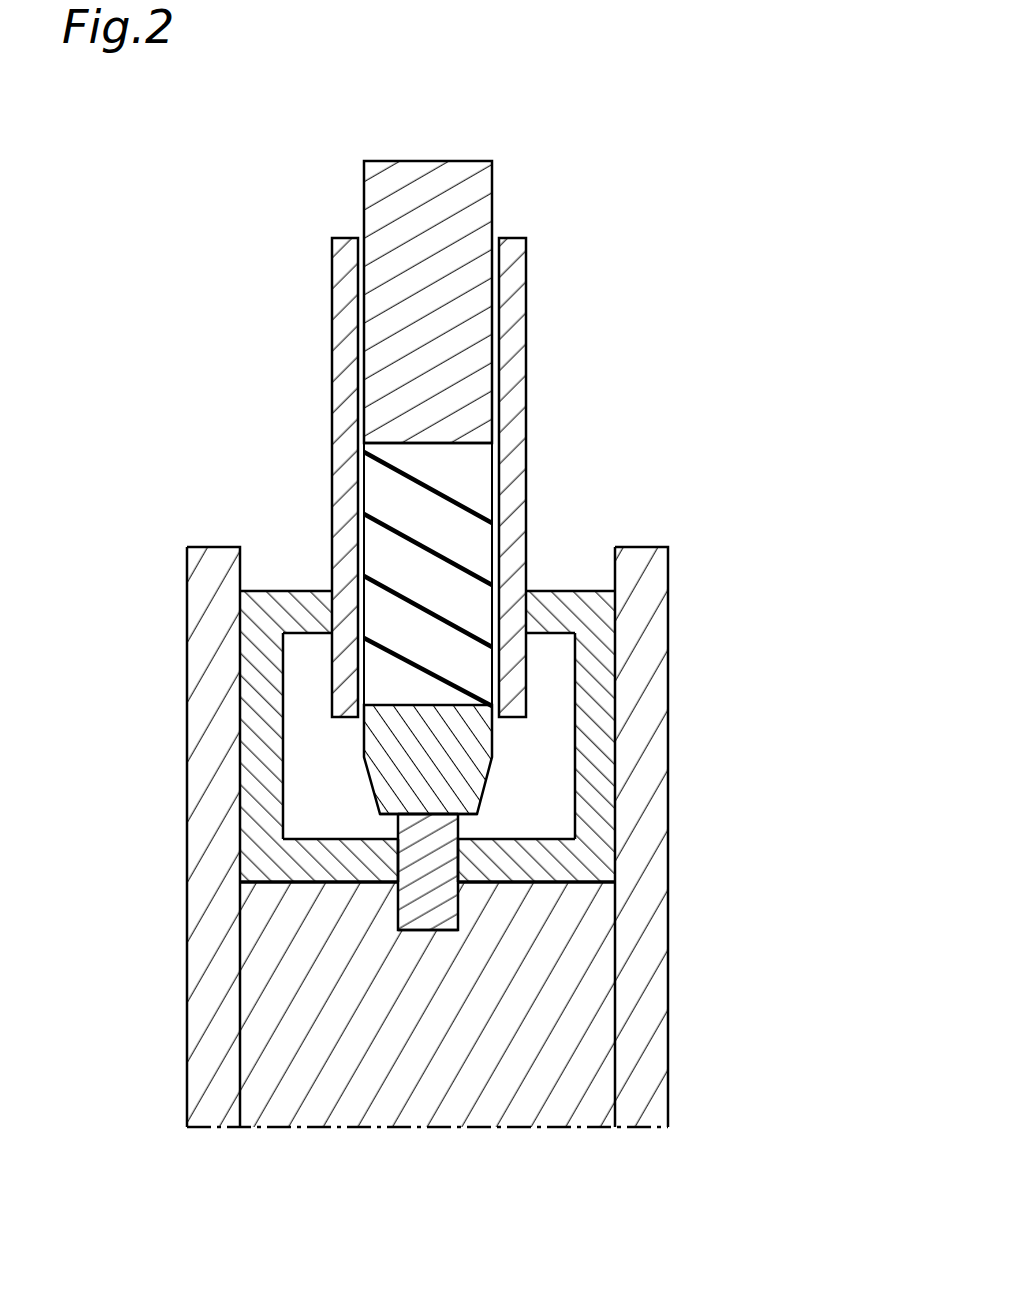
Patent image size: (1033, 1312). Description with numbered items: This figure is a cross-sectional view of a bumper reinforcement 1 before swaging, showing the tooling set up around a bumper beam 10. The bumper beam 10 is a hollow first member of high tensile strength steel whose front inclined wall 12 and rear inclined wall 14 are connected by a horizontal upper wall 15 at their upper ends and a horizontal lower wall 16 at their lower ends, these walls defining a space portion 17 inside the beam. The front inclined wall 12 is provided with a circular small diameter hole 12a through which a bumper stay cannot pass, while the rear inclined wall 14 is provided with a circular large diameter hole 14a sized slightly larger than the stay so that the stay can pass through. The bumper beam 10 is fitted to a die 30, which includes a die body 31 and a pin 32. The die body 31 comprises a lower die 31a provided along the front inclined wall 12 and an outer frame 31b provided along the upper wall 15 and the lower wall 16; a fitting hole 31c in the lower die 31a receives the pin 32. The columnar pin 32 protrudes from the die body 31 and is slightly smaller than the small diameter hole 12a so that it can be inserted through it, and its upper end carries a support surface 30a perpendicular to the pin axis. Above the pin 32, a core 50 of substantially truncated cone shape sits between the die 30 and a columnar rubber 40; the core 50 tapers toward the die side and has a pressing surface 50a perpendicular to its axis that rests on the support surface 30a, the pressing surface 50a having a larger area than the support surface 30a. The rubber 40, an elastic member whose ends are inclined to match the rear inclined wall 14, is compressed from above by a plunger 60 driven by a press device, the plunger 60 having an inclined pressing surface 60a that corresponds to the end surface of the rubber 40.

The bumper reinforcement 1 is at (660, 147).
The bumper beam 10 is at (444, 689).
The front inclined wall 12 is at (547, 870).
The small diameter hole 12a is at (455, 870).
The rear inclined wall 14 is at (282, 602).
The large diameter hole 14a is at (332, 605).
The upper wall 15 is at (593, 723).
The lower wall 16 is at (252, 727).
The space portion 17 is at (341, 771).
The die 30 is at (454, 885).
The support surface 30a is at (418, 810).
The die body 31 is at (444, 1041).
The lower die 31a is at (425, 1102).
The outer frame 31b is at (207, 818).
The fitting hole 31c is at (413, 930).
The pin 32 is at (443, 852).
The rubber 40 is at (398, 497).
The core 50 is at (441, 769).
The pressing surface 50a is at (457, 836).
The plunger 60 is at (477, 192).
The pressing surface 60a is at (480, 455).